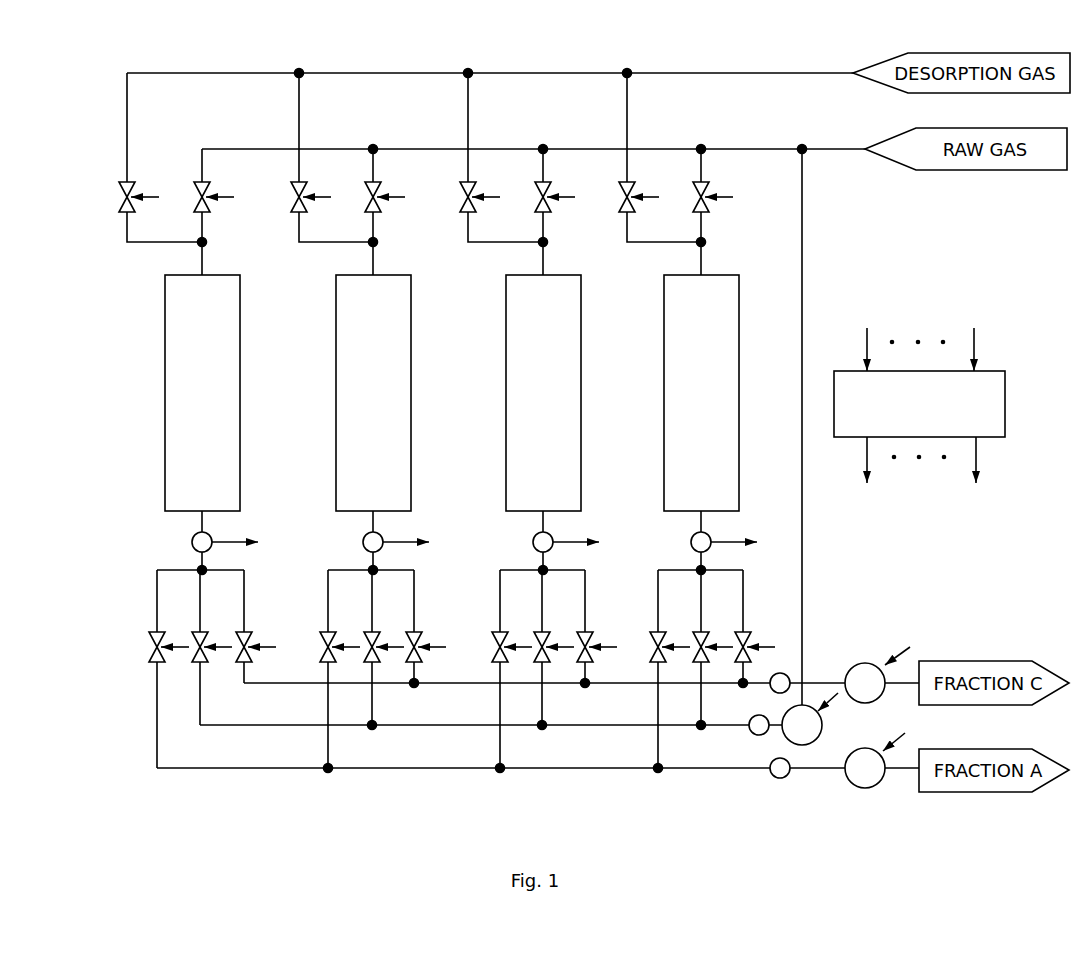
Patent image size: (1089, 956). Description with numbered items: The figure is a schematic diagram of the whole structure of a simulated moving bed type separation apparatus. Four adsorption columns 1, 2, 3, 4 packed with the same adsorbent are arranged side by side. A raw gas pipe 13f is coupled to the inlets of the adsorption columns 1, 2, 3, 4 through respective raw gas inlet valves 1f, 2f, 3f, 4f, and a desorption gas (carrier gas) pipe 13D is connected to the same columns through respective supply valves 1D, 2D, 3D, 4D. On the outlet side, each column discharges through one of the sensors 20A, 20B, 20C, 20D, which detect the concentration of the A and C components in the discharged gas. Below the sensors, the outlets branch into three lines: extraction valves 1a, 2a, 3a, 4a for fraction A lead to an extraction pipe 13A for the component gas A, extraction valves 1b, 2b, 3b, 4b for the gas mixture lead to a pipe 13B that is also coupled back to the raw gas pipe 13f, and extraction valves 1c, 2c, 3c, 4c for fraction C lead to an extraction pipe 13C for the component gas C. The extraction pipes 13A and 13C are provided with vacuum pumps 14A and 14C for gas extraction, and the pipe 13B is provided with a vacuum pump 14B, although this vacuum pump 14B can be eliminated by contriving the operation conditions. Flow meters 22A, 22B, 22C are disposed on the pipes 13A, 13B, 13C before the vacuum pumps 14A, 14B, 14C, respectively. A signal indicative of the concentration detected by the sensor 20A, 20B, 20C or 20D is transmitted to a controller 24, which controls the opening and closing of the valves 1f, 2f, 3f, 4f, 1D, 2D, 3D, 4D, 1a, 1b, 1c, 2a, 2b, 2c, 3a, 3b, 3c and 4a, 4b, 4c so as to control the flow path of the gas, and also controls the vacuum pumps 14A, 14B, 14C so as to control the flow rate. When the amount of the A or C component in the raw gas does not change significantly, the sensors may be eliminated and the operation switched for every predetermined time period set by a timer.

The adsorption column 1 is at (164, 392).
The adsorption column 2 is at (336, 392).
The adsorption column 3 is at (506, 392).
The adsorption column 4 is at (664, 392).
The supply valve 1D is at (124, 212).
The supply valve 2D is at (296, 212).
The supply valve 3D is at (465, 212).
The supply valve 4D is at (624, 212).
The raw gas inlet valve 1f is at (205, 190).
The raw gas inlet valve 2f is at (376, 190).
The raw gas inlet valve 3f is at (546, 190).
The raw gas inlet valve 4f is at (704, 190).
The extraction valve for fraction A 1a is at (157, 662).
The extraction valve for gas mixture 1b is at (200, 662).
The extraction valve for fraction C 1c is at (244, 662).
The extraction valve for fraction A 2a is at (328, 662).
The extraction valve for gas mixture 2b is at (372, 662).
The extraction valve for fraction C 2c is at (414, 662).
The extraction valve for fraction A 3a is at (500, 662).
The extraction valve for gas mixture 3b is at (542, 662).
The extraction valve for fraction C 3c is at (585, 662).
The extraction valve for fraction A 4a is at (658, 662).
The extraction valve for gas mixture 4b is at (701, 662).
The extraction valve for fraction C 4c is at (743, 662).
The sensor 20A is at (191, 546).
The sensor 20B is at (362, 546).
The sensor 20C is at (532, 546).
The sensor 20D is at (690, 546).
The desorption gas pipe 13D is at (803, 73).
The raw gas pipe 13f is at (835, 149).
The pipe 13B is at (803, 243).
The extraction pipe for component gas C 13C is at (822, 683).
The extraction pipe for component gas A 13A is at (827, 775).
The flow meter 22A is at (781, 778).
The flow meter 22B is at (759, 735).
The flow meter 22C is at (780, 673).
The vacuum pump 14A is at (866, 788).
The vacuum pump 14B is at (822, 733).
The vacuum pump 14C is at (866, 663).
The controller 24 is at (993, 437).